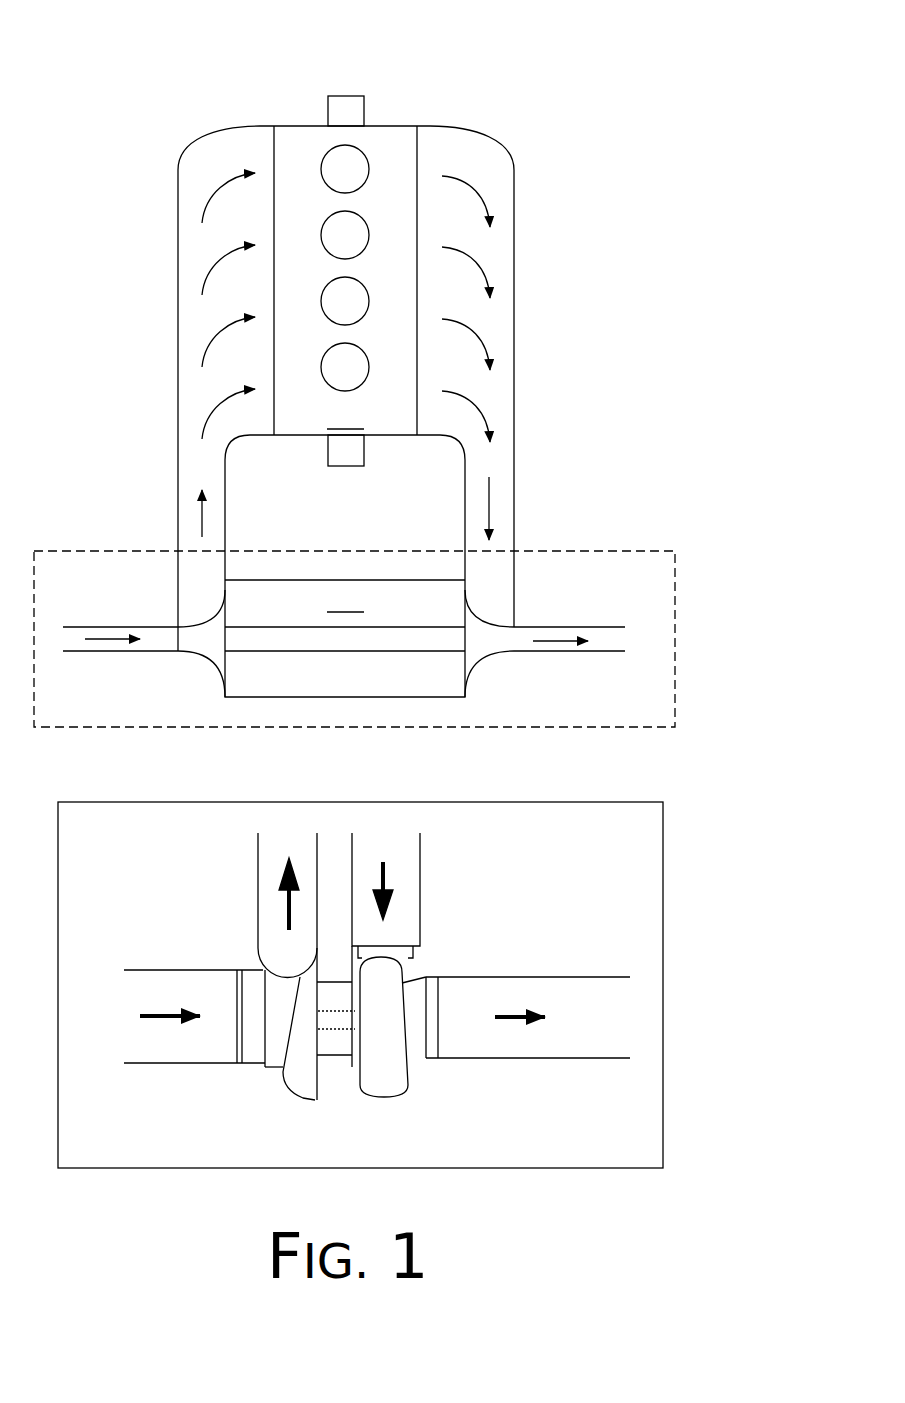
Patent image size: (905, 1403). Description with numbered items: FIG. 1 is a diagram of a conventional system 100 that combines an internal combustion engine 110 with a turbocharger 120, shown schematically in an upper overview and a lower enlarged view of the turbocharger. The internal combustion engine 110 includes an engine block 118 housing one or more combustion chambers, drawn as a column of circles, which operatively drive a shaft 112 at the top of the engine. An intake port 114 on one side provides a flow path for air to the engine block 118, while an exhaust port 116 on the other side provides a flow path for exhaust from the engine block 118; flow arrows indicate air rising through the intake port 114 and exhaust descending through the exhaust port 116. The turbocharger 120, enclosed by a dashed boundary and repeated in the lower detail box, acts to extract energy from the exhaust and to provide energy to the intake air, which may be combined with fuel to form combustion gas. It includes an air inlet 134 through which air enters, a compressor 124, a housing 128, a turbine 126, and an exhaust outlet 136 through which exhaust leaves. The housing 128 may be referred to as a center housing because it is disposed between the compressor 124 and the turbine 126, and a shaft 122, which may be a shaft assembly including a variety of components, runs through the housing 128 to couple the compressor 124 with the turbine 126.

The system 100 is at (508, 52).
The internal combustion engine 110 is at (308, 124).
The shaft 112 is at (347, 95).
The intake port 114 is at (197, 143).
The exhaust port 116 is at (509, 158).
The engine block 118 is at (345, 437).
The turbocharger 120 is at (566, 551).
The shaft 122 is at (345, 651).
The compressor 124 is at (205, 660).
The turbine 126 is at (485, 660).
The housing 128 is at (345, 1058).
The air inlet 134 is at (138, 626).
The exhaust outlet 136 is at (572, 627).